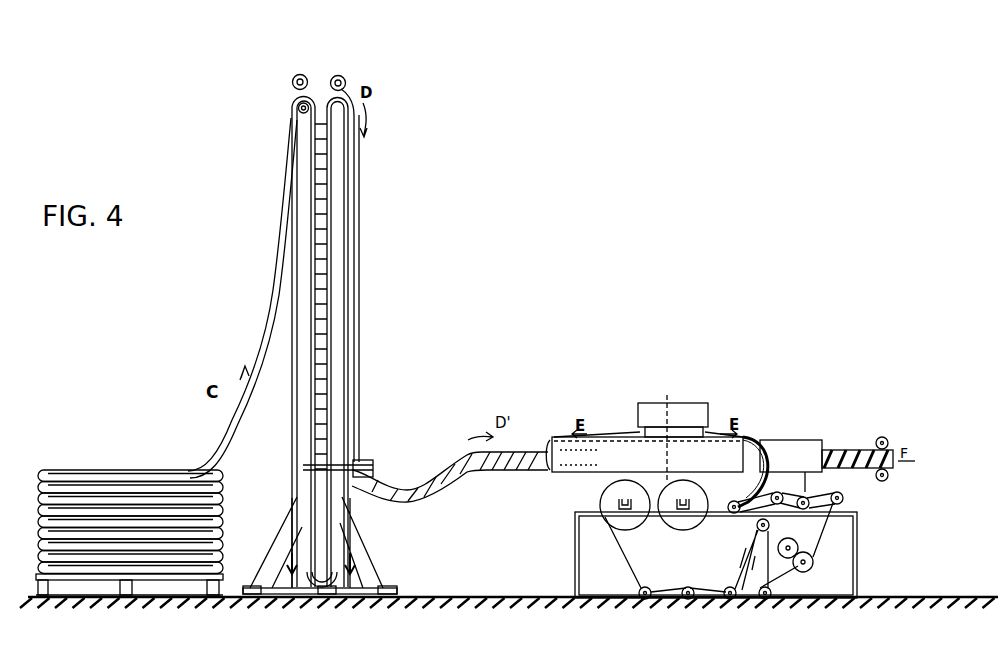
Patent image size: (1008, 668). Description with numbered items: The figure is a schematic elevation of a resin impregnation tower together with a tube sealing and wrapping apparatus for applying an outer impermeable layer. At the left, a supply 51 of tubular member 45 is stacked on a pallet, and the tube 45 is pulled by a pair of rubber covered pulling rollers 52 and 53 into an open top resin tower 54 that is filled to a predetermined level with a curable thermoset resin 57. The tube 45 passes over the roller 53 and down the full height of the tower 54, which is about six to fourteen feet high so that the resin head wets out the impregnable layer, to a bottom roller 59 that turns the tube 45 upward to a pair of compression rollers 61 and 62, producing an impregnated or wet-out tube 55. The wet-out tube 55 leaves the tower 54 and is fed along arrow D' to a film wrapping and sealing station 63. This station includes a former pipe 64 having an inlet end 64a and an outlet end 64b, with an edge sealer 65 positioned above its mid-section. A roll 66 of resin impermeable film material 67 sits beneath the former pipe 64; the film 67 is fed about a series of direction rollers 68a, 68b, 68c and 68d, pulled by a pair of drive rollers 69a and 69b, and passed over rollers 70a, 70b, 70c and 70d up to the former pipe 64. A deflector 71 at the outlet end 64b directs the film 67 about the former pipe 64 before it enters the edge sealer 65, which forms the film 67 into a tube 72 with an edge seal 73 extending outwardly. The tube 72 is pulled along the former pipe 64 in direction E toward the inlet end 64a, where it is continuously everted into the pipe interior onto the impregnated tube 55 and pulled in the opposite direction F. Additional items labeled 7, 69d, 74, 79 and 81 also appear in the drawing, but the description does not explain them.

The supply 51 is at (71, 443).
The tubular member 45 is at (218, 442).
The pulling roller 52 is at (308, 77).
The pulling roller 53 is at (298, 112).
The resin tower 54 is at (342, 305).
The impregnated tube 55 is at (359, 340).
The curable thermoset resin 57 is at (325, 205).
The bottom roller 59 is at (330, 600).
The compression roller 61 is at (348, 90).
The compression roller 62 is at (345, 80).
The hose section 7 is at (315, 505).
The film wrapping and sealing station 63 is at (612, 409).
The former pipe 64 is at (644, 452).
The inlet end 64a is at (552, 474).
The outlet end 64b is at (818, 441).
The edge sealer 65 is at (708, 418).
The roll 66 is at (606, 499).
The resin impermeable film material 67 is at (630, 572).
The direction roller 68a is at (648, 600).
The direction roller 68b is at (688, 600).
The direction roller 68c is at (730, 600).
The direction roller 68d is at (766, 600).
The drive roller 69a is at (796, 544).
The drive roller 69b is at (811, 568).
The roller 69d is at (770, 525).
The roller 70a is at (843, 496).
The roller 70b is at (815, 495).
The roller 70c is at (786, 493).
The roller 70d is at (745, 503).
The deflector 71 is at (757, 480).
The tube 72 is at (617, 437).
The edge seal 73 is at (622, 437).
The output strip 74 is at (865, 452).
The lower roller 79 is at (885, 480).
The upper roller 81 is at (894, 439).